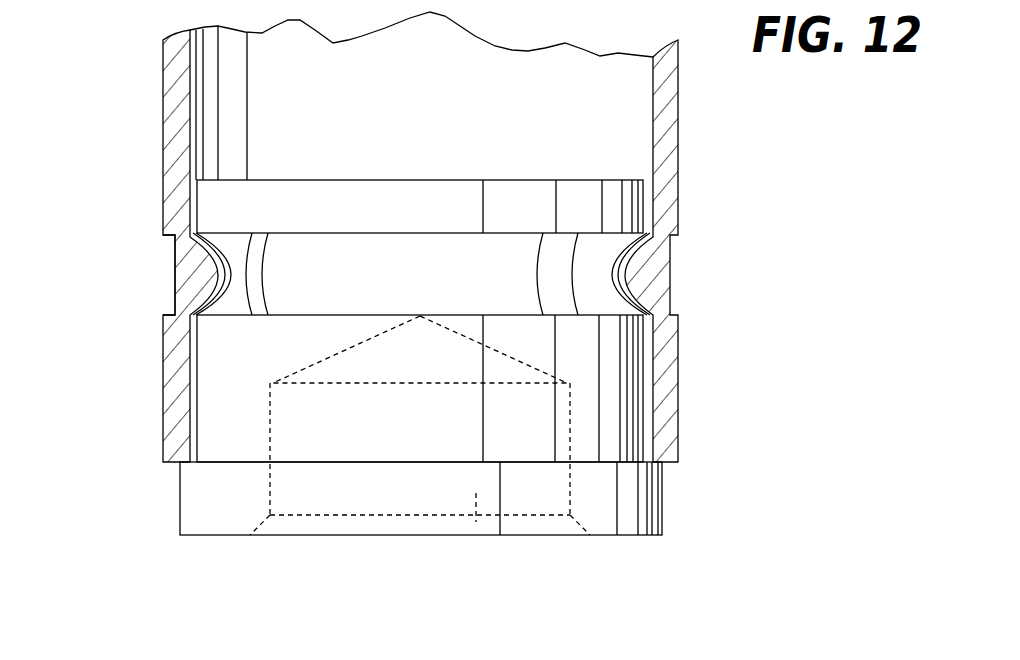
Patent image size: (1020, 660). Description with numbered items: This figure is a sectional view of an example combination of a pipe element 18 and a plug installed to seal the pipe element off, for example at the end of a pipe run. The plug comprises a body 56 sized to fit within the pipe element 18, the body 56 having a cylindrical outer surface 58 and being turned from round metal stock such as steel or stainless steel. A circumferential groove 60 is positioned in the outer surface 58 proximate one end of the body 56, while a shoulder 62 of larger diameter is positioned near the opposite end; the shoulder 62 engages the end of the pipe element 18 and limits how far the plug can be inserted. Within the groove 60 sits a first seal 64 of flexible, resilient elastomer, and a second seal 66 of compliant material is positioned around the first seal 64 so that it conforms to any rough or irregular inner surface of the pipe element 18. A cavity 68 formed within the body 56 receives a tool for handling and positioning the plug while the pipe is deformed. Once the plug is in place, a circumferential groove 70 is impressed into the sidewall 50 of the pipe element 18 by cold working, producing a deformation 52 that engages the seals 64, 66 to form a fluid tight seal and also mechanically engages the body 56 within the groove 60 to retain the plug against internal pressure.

The pipe element 18 is at (672, 98).
The sidewall 50 is at (166, 113).
The deformation 52 is at (648, 267).
The body 56 is at (213, 375).
The cylindrical outer surface 58 is at (223, 443).
The circumferential groove 60 is at (523, 282).
The shoulder 62 is at (637, 497).
The first seal 64 is at (225, 277).
The second seal 66 is at (650, 232).
The cavity 68 is at (478, 534).
The circumferential groove 70 is at (165, 262).